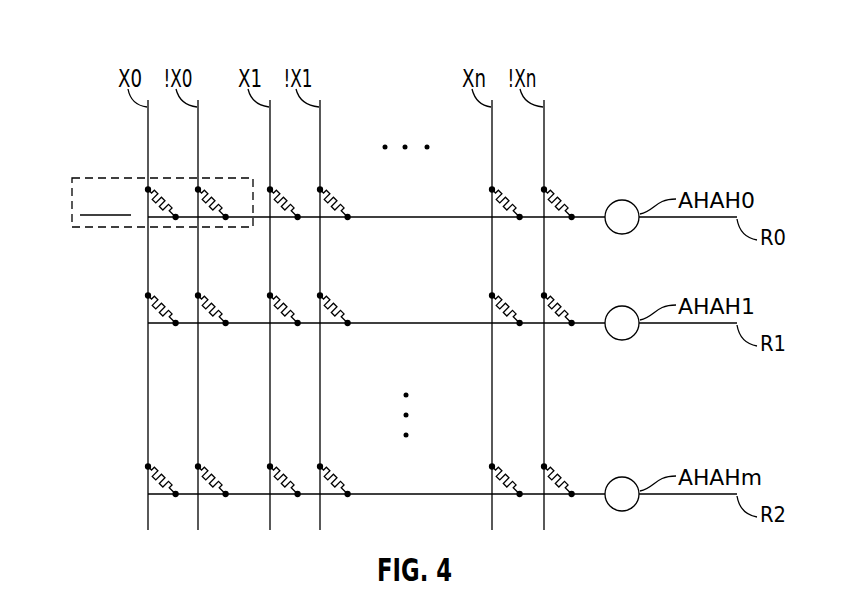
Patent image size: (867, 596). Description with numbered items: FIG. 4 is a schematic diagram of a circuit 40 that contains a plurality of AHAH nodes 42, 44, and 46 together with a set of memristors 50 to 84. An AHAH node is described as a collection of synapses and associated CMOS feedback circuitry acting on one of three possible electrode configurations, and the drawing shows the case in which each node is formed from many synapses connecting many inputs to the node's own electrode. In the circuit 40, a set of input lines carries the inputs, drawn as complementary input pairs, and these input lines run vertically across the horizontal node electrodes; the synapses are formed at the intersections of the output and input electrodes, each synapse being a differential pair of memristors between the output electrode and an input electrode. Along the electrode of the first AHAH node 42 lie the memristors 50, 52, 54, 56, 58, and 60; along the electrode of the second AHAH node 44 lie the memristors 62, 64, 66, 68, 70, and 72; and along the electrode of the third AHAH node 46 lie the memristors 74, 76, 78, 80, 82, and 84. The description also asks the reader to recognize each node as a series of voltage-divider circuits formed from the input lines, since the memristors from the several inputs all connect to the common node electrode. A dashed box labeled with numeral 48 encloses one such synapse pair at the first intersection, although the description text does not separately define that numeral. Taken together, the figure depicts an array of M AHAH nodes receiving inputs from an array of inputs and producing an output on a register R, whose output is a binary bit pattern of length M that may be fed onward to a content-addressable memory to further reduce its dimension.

The circuit 40 is at (151, 27).
The AHAH node 42 is at (636, 187).
The AHAH node 44 is at (636, 292).
The AHAH node 46 is at (636, 462).
The synaptic weight cell 48 is at (91, 176).
The memristor 50 is at (174, 197).
The memristor 52 is at (224, 197).
The memristor 54 is at (296, 197).
The memristor 56 is at (346, 197).
The memristor 58 is at (518, 197).
The memristor 60 is at (570, 197).
The memristor 62 is at (174, 303).
The memristor 64 is at (224, 303).
The memristor 66 is at (296, 303).
The memristor 68 is at (346, 303).
The memristor 70 is at (518, 303).
The memristor 72 is at (570, 303).
The memristor 74 is at (174, 474).
The memristor 76 is at (224, 474).
The memristor 78 is at (296, 474).
The memristor 80 is at (346, 474).
The memristor 82 is at (518, 474).
The memristor 84 is at (570, 474).